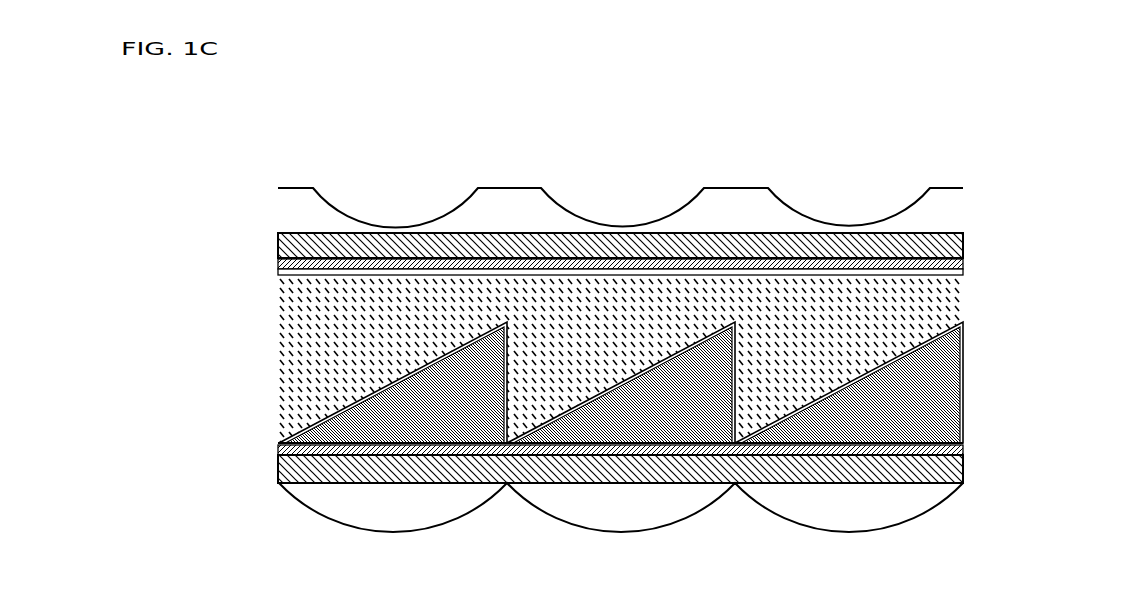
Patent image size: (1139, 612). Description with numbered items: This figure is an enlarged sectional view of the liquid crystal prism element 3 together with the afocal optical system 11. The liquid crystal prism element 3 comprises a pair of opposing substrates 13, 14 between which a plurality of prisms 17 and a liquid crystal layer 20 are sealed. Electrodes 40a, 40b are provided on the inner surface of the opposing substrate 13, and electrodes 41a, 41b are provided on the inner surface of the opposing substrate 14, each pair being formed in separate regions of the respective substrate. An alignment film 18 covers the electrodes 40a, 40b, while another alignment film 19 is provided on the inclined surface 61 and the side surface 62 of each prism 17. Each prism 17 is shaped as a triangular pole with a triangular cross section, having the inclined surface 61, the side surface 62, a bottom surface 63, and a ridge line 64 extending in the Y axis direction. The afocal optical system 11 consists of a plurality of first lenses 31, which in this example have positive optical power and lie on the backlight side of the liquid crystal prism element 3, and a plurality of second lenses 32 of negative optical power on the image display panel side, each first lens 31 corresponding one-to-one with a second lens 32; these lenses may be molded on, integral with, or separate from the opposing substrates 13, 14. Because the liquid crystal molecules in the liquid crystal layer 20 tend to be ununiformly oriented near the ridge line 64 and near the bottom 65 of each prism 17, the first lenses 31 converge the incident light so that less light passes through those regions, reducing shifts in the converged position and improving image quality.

The liquid crystal prism element 3 is at (215, 232).
The afocal optical system 11 is at (685, 355).
The opposing substrate 13 is at (948, 237).
The opposing substrate 14 is at (955, 462).
The prism 17 is at (955, 373).
The alignment film 18 is at (955, 270).
The alignment film 19 is at (660, 382).
The liquid crystal layer 20 is at (955, 300).
The first lens 31 is at (940, 497).
The second lens 32 is at (943, 205).
The electrode 40a is at (686, 254).
The electrode 40b is at (950, 257).
The electrode 41a is at (686, 459).
The electrode 41b is at (955, 442).
The inclined surface 61 is at (395, 375).
The side surface 62 is at (497, 345).
The bottom surface 63 is at (366, 437).
The ridge line 64 is at (501, 316).
The bottom 65 is at (271, 436).